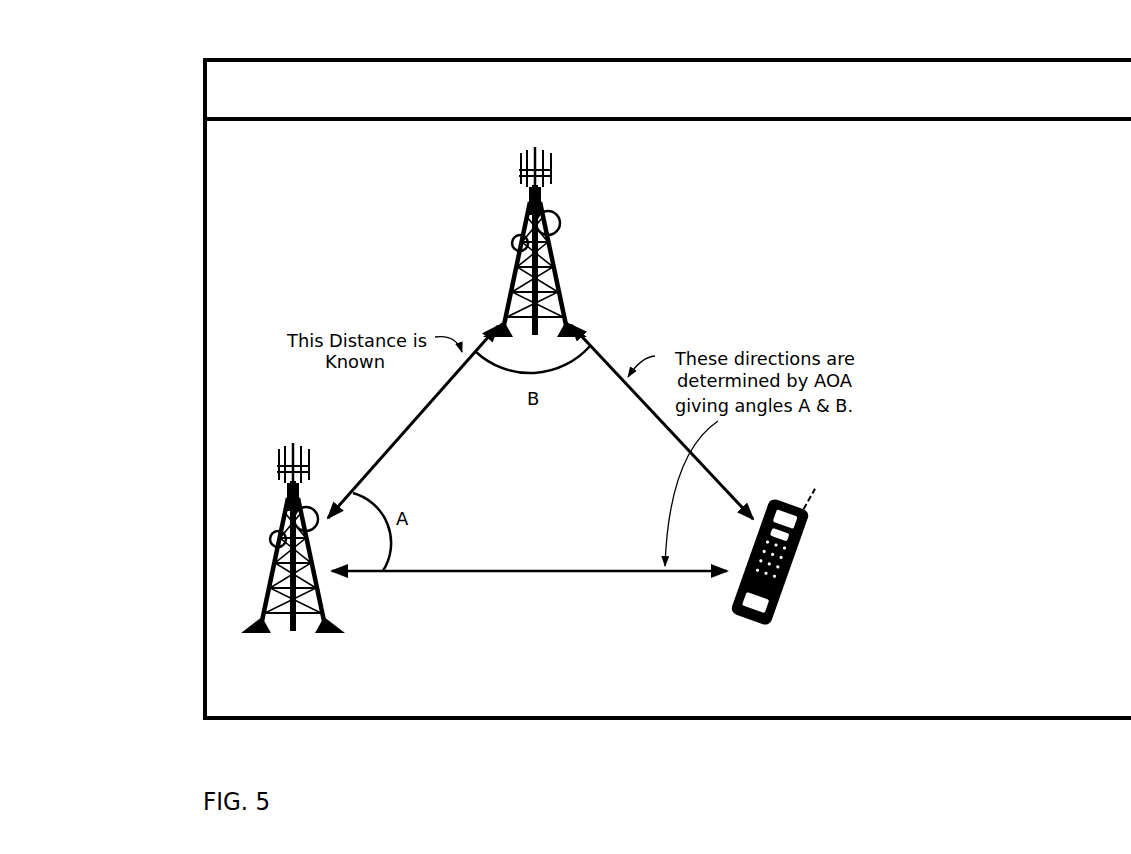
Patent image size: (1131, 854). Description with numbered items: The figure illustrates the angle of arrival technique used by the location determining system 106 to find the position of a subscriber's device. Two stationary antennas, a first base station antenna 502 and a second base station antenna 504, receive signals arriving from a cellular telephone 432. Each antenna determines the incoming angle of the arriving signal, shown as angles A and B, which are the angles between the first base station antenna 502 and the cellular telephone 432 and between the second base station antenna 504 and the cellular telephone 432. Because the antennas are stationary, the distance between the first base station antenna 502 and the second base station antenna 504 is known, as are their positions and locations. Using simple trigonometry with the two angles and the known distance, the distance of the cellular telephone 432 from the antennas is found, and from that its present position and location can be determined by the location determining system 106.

The location determining system 106 is at (198, 113).
The first base station antenna 502 is at (506, 232).
The second base station antenna 504 is at (300, 523).
The cellular telephone 432 is at (808, 509).